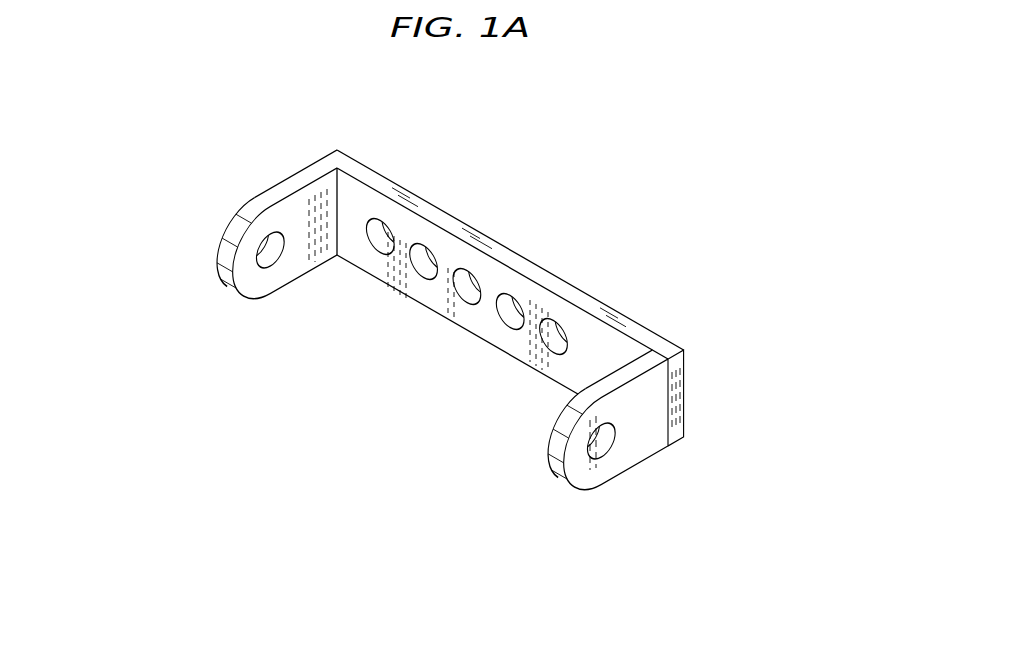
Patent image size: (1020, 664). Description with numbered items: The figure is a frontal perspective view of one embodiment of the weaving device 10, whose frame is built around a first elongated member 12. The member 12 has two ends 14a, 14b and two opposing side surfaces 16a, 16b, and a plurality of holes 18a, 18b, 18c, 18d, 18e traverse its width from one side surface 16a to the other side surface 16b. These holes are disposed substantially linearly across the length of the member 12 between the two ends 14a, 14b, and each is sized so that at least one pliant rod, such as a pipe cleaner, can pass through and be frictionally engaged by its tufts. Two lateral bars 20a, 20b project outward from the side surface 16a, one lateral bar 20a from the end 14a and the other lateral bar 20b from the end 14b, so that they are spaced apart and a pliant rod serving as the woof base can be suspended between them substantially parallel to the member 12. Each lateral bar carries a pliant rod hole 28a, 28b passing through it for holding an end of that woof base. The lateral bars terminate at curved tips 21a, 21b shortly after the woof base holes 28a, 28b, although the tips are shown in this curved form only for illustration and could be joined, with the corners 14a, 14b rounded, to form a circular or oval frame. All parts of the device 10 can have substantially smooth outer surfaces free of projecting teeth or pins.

The weaving device 10 is at (205, 165).
The first elongated member 12 is at (585, 292).
The end 14a is at (288, 174).
The end 14b is at (687, 392).
The side surface 16a is at (397, 223).
The side surface 16b is at (488, 238).
The hole 18a is at (378, 250).
The hole 18b is at (420, 278).
The hole 18c is at (466, 300).
The hole 18d is at (508, 325).
The hole 18e is at (552, 352).
The lateral bar 20a is at (214, 256).
The lateral bar 20b is at (625, 457).
The tip 21a is at (231, 278).
The tip 21b is at (563, 467).
The pliant rod hole 28a is at (267, 250).
The pliant rod hole 28b is at (607, 438).